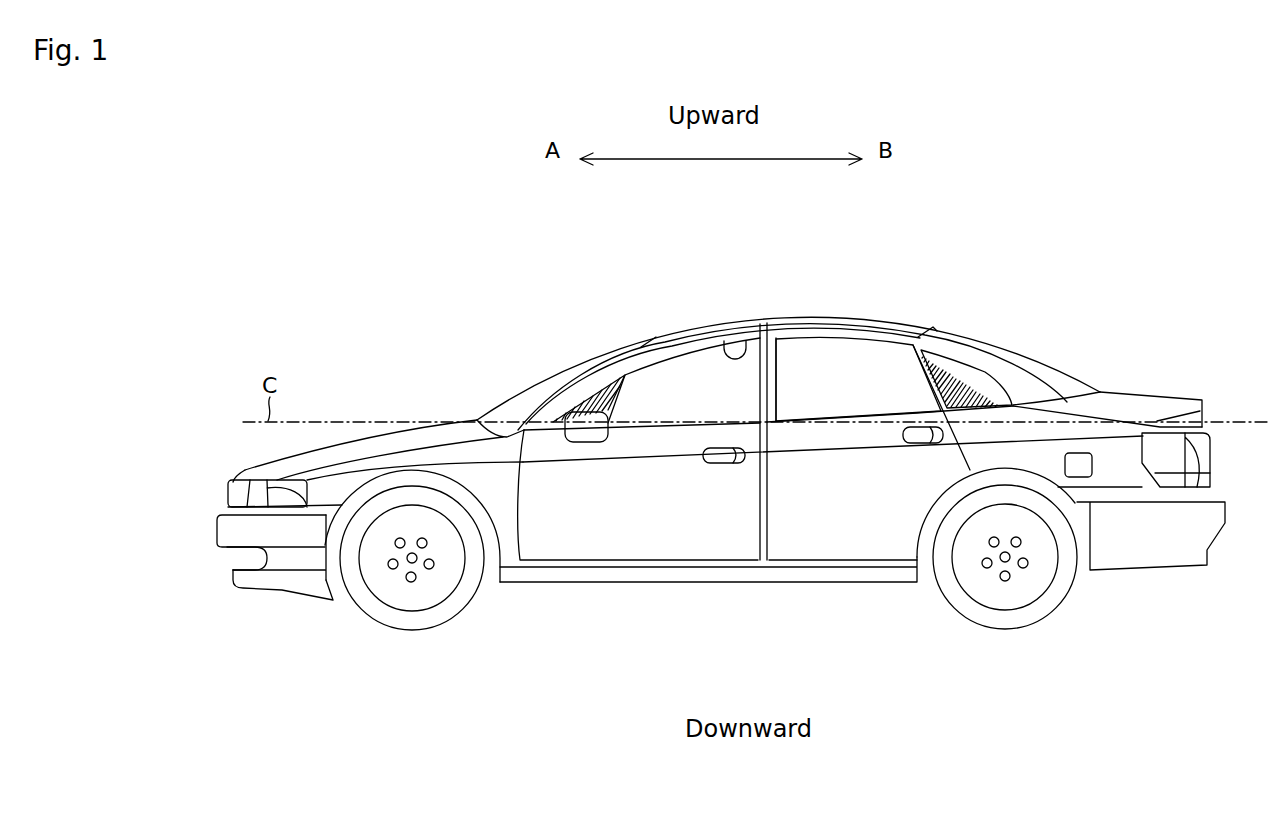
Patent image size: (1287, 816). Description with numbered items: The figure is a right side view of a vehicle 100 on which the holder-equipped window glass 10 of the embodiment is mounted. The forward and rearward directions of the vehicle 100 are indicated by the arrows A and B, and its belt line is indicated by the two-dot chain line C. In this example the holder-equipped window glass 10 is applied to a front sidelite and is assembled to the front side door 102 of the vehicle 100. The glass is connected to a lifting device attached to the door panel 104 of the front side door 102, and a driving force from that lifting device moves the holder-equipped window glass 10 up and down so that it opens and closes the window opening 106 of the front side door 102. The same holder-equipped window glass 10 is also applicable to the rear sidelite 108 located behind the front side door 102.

The vehicle 100 is at (909, 288).
The holder-equipped window glass 10 is at (678, 379).
The front side door 102 is at (604, 514).
The door panel 104 is at (692, 515).
The window opening 106 is at (740, 343).
The rear sidelite 108 is at (836, 379).